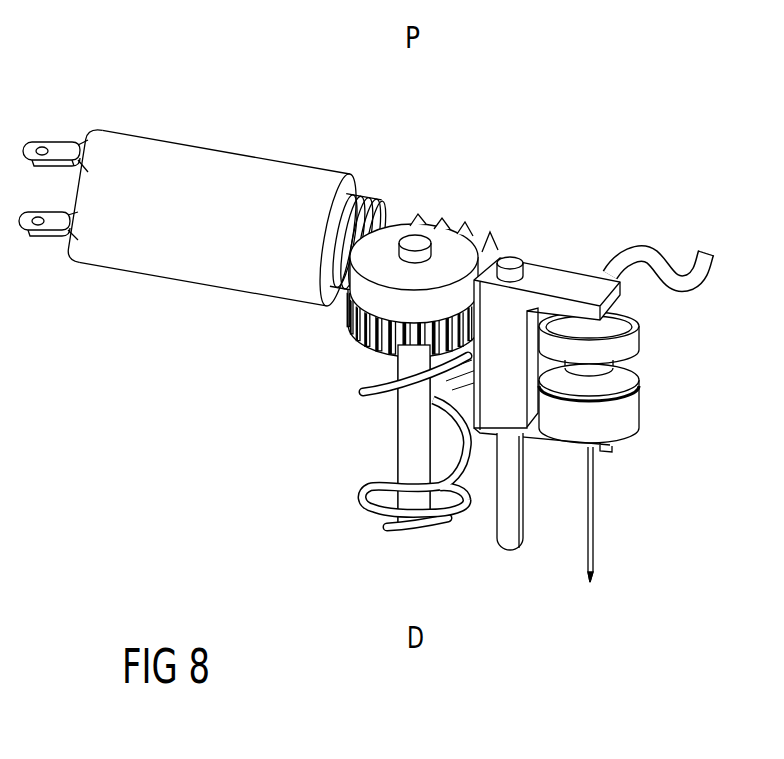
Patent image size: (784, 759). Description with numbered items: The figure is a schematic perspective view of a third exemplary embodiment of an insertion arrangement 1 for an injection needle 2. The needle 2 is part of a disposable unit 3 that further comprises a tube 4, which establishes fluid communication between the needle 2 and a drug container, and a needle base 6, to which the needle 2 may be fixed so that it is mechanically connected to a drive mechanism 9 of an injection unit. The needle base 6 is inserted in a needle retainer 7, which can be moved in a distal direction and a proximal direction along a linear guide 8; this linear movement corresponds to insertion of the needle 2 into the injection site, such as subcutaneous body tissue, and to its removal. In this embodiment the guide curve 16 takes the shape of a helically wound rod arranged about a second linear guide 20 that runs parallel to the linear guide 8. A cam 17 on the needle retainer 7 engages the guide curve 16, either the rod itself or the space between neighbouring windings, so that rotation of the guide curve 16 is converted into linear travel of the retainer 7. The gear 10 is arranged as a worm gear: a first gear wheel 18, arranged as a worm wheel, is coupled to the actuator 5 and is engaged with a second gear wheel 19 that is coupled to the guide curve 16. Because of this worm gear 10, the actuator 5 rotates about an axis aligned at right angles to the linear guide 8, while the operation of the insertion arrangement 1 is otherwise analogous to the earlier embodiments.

The insertion arrangement 1 is at (640, 124).
The injection needle 2 is at (592, 533).
The disposable unit 3 is at (631, 449).
The tube 4 is at (706, 250).
The actuator 5 is at (158, 162).
The needle base 6 is at (636, 412).
The needle retainer 7 is at (556, 282).
The linear guide 8 is at (512, 538).
The drive mechanism 9 is at (279, 376).
The gear 10 is at (435, 218).
The guide curve 16 is at (400, 484).
The cam 17 is at (415, 386).
The first gear wheel 18 is at (466, 196).
The second gear wheel 19 is at (368, 318).
The second linear guide 20 is at (405, 456).